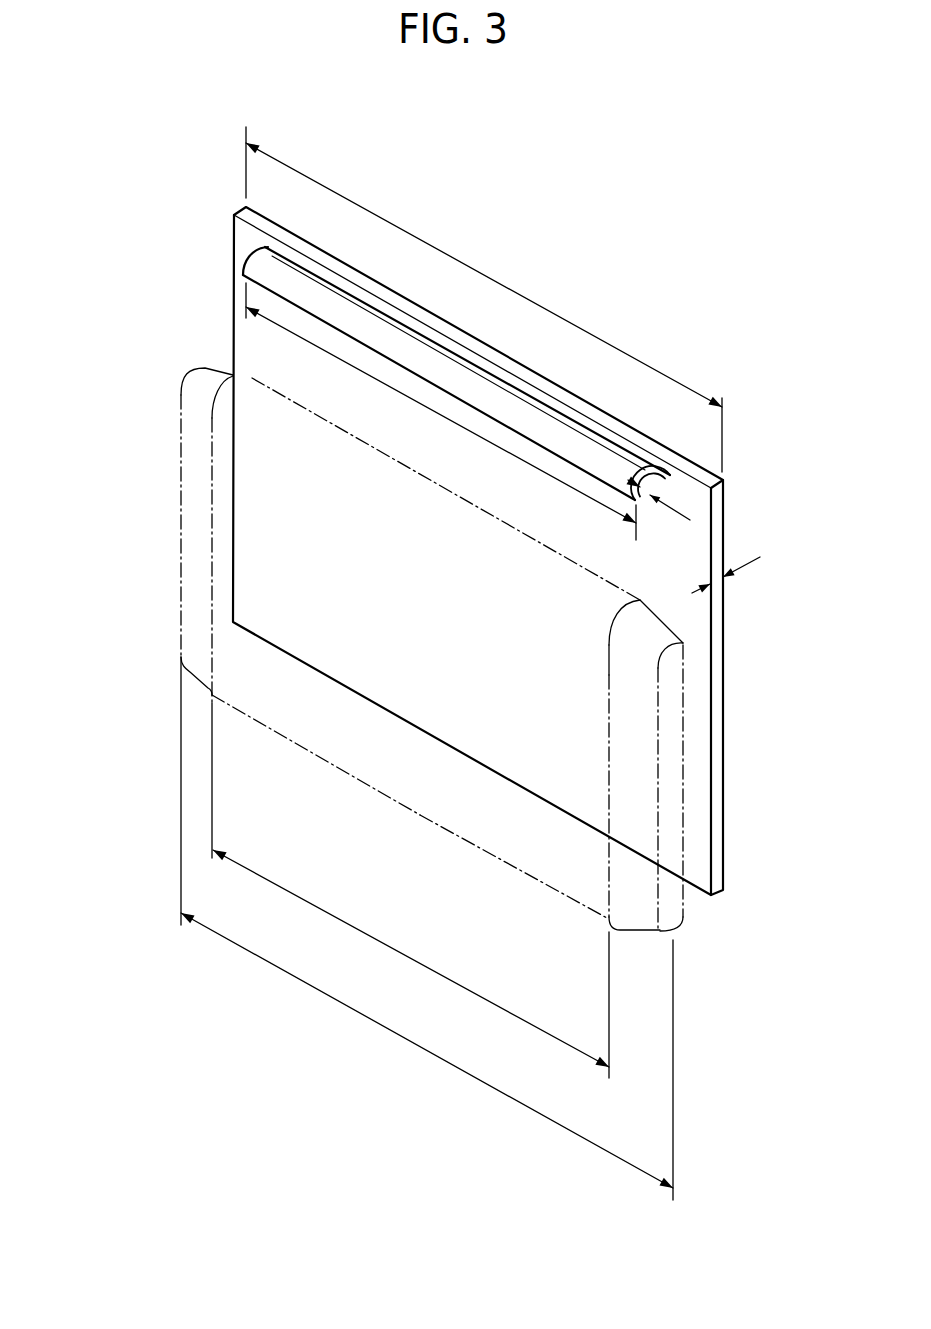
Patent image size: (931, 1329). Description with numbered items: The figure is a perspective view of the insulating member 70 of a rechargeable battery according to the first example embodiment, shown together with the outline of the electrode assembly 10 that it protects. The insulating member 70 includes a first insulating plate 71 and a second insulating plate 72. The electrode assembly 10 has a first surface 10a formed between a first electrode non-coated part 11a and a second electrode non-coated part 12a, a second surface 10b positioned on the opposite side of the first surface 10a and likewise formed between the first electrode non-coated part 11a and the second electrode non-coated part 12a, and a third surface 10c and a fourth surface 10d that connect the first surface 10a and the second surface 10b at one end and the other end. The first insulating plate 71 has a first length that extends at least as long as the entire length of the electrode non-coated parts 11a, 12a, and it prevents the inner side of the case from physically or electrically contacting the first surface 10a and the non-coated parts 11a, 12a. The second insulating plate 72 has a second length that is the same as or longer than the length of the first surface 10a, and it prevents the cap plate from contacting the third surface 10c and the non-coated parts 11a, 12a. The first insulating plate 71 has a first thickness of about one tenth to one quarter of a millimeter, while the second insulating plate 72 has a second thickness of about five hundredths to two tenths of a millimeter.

The electrode assembly 10 is at (457, 802).
The first surface 10a is at (510, 810).
The second surface 10b is at (325, 722).
The third surface 10c is at (255, 393).
The fourth surface 10d is at (620, 930).
The first electrode non-coated part 11a is at (181, 527).
The second electrode non-coated part 12a is at (672, 920).
The insulating member 70 is at (645, 407).
The first insulating plate 71 is at (255, 333).
The second insulating plate 72 is at (258, 256).